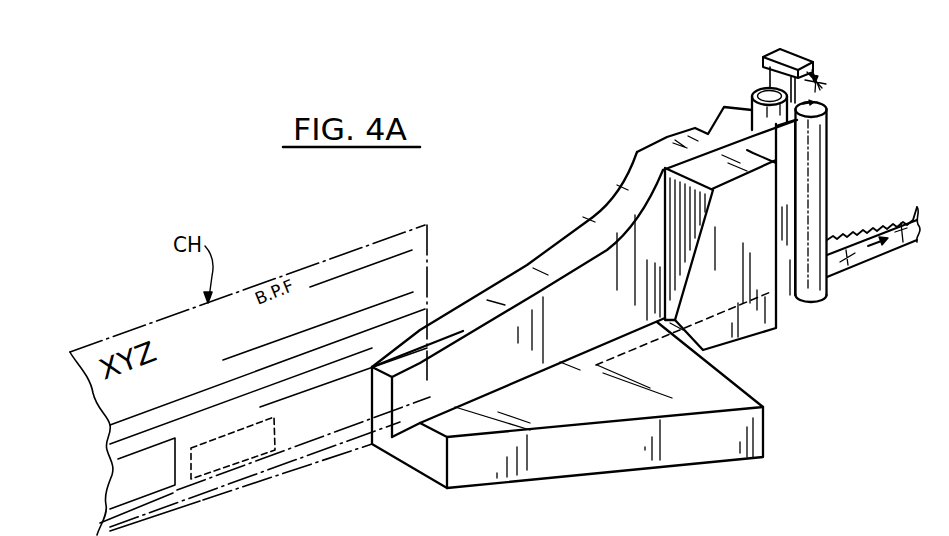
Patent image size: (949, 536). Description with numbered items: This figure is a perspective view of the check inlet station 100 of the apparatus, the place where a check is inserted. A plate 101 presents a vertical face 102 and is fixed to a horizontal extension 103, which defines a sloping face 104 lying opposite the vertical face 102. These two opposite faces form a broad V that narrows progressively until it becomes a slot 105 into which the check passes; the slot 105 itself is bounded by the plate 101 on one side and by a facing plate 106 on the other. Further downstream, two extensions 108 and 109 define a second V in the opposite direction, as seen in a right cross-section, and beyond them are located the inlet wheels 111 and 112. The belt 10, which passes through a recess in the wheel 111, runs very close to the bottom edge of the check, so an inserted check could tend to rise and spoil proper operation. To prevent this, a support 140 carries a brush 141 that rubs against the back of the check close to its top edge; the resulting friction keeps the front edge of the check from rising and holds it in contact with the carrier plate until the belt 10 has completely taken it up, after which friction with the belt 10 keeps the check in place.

The belt 10 is at (898, 233).
The inlet station 100 is at (525, 245).
The plate 101 is at (477, 312).
The vertical face 102 is at (501, 340).
The horizontal extension 103 is at (560, 410).
The sloping face 104 is at (402, 433).
The slot 105 is at (669, 238).
The facing plate 106 is at (730, 272).
The extension 108 is at (725, 122).
The extension 109 is at (787, 197).
The inlet wheel 111 is at (752, 93).
The inlet wheel 112 is at (822, 146).
The support 140 is at (815, 69).
The brush 141 is at (822, 79).